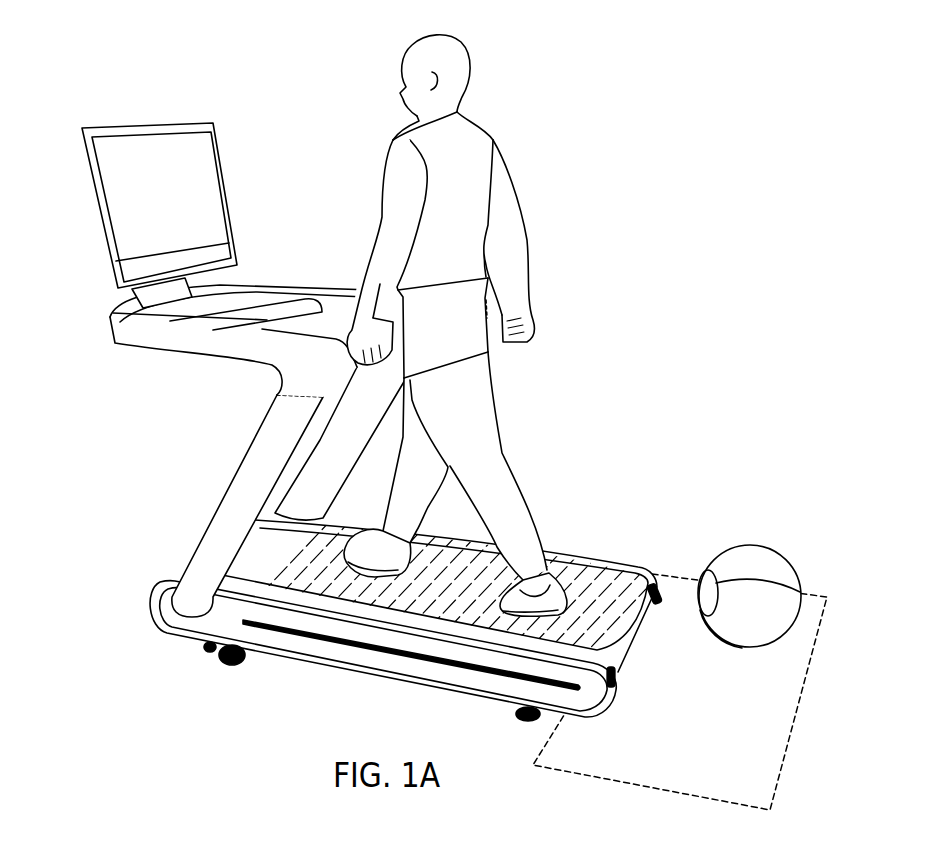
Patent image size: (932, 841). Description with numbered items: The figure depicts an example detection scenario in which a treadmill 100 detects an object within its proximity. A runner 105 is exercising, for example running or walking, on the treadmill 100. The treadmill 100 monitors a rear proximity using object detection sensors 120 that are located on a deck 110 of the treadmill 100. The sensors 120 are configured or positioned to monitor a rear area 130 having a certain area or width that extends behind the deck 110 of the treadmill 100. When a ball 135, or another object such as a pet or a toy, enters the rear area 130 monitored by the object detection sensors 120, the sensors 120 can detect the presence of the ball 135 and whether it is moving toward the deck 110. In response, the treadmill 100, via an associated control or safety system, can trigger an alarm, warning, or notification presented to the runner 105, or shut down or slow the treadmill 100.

The treadmill 100 is at (496, 422).
The runner 105 is at (494, 140).
The deck 110 is at (193, 640).
The object detection sensors 120 is at (655, 587).
The rear area 130 is at (790, 707).
The ball 135 is at (787, 550).